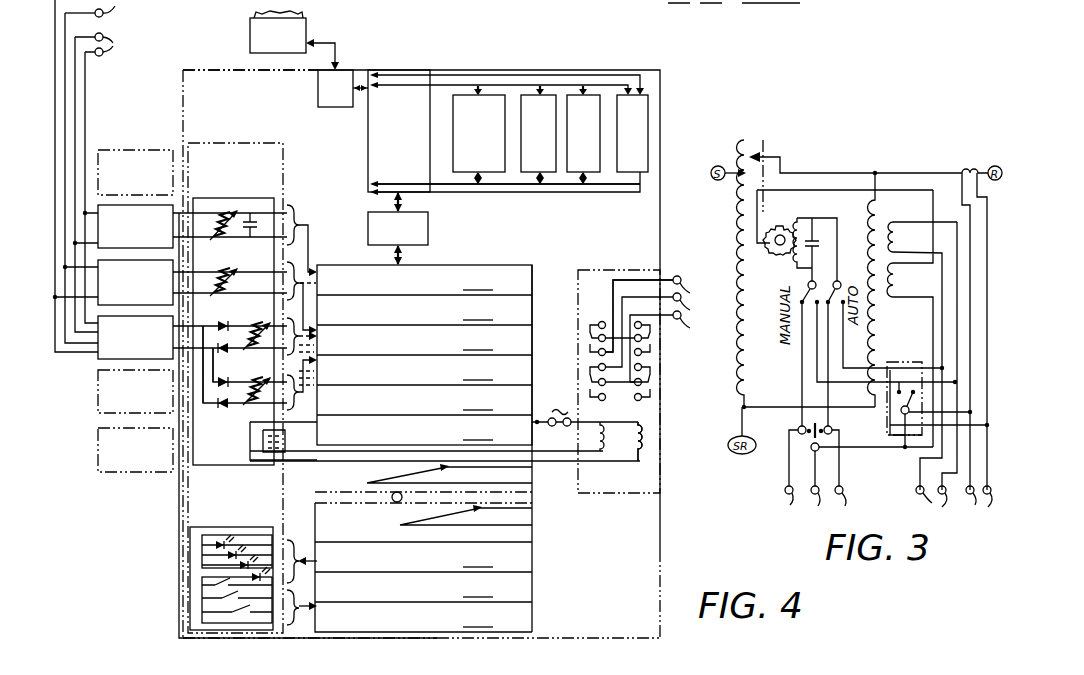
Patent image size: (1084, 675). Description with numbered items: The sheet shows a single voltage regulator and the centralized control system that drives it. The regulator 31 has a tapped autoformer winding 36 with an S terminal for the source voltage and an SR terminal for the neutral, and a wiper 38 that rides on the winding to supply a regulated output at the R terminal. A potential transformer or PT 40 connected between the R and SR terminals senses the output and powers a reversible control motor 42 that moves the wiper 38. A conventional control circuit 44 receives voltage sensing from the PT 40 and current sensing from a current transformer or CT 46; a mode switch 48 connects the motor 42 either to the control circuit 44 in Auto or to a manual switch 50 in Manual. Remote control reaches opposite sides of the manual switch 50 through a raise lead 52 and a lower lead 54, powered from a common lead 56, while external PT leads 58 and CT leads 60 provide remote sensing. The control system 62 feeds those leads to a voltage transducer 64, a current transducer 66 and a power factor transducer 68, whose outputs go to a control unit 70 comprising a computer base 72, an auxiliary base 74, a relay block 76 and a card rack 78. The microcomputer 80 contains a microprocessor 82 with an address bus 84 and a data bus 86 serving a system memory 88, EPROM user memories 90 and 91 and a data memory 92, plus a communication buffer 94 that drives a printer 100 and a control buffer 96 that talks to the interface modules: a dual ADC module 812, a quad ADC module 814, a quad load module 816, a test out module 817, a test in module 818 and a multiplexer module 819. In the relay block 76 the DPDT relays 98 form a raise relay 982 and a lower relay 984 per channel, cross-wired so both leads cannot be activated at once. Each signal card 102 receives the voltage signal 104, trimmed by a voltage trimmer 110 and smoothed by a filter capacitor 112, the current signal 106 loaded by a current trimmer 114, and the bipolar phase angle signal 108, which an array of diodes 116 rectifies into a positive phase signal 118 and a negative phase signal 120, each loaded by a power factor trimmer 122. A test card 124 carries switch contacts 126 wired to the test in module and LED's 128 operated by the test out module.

In FIG. 3, the regulator 31 is at (780, 455).
In FIG. 3, the tapped autoformer winding 36 is at (752, 364).
In FIG. 3, the wiper 38 is at (772, 153).
In FIG. 3, the potential transformer (PT) 40 is at (885, 226).
In FIG. 3, the reversible control motor 42 is at (792, 228).
In FIG. 3, the control circuit 44 is at (900, 360).
In FIG. 3, the current transformer (CT) 46 is at (962, 166).
In FIG. 3, the mode switch 48 is at (838, 282).
In FIG. 3, the manual switch 50 is at (833, 433).
In FIG. 4, the raise lead 52 is at (689, 268).
In FIG. 3, the raise lead 52 is at (780, 496).
In FIG. 4, the lower lead 54 is at (694, 322).
In FIG. 3, the lower lead 54 is at (841, 503).
In FIG. 4, the common lead 56 is at (696, 297).
In FIG. 3, the common lead 56 is at (806, 508).
In FIG. 4, the PT leads 58 is at (113, 44).
In FIG. 3, the PT leads 58 is at (922, 507).
In FIG. 4, the CT leads 60 is at (111, 8).
In FIG. 3, the CT leads 60 is at (969, 507).
In FIG. 4, the control system 62 is at (670, 536).
In FIG. 4, the voltage transducer 64 is at (148, 239).
In FIG. 4, the current transducer 66 is at (148, 295).
In FIG. 4, the power factor transducer 68 is at (148, 184).
In FIG. 4, the control unit 70 is at (232, 72).
In FIG. 4, the computer base 72 is at (444, 379).
In FIG. 4, the auxiliary base 74 is at (451, 567).
In FIG. 4, the relay block 76 is at (598, 495).
In FIG. 4, the card rack 78 is at (270, 148).
In FIG. 4, the microcomputer 80 is at (482, 223).
In FIG. 4, the microprocessor 82 is at (410, 145).
In FIG. 4, the address bus 84 is at (523, 193).
In FIG. 4, the data bus 86 is at (503, 74).
In FIG. 4, the system memory 88 is at (490, 144).
In FIG. 4, the EPROM user memory 90 is at (550, 144).
In FIG. 4, the EPROM user memory 91 is at (594, 144).
In FIG. 4, the data memory 92 is at (643, 144).
In FIG. 4, the communication buffer 94 is at (345, 99).
In FIG. 4, the control buffer 96 is at (410, 242).
In FIG. 4, the DPDT relays 98 is at (622, 452).
In FIG. 4, the printer 100 is at (292, 50).
In FIG. 4, the signal card 102 is at (232, 456).
In FIG. 4, the voltage signal 104 is at (318, 233).
In FIG. 4, the current signal 106 is at (305, 325).
In FIG. 4, the reactive phase angle signal 108 is at (212, 356).
In FIG. 4, the voltage trimmer 110 is at (230, 238).
In FIG. 4, the filter capacitor 112 is at (258, 233).
In FIG. 4, the current trimmer 114 is at (230, 296).
In FIG. 4, the array of diodes 116 is at (234, 350).
In FIG. 4, the positive phase signal 118 is at (320, 362).
In FIG. 4, the negative phase signal 120 is at (240, 388).
In FIG. 4, the power factor trimmer 122 is at (270, 330).
In FIG. 4, the test card 124 is at (193, 527).
In FIG. 4, the switch contacts 126 is at (205, 585).
In FIG. 4, the LED's 128 is at (233, 552).
In FIG. 4, the raise relay 982 is at (592, 420).
In FIG. 4, the lower relay 984 is at (646, 431).
In FIG. 4, the dual ADC module 812 is at (434, 280).
In FIG. 4, the quad ADC module 814 is at (434, 355).
In FIG. 4, the quad load module 816 is at (435, 430).
In FIG. 4, the test out module 817 is at (435, 557).
In FIG. 4, the test in module 818 is at (435, 617).
In FIG. 4, the multiplexer module 819 is at (433, 355).